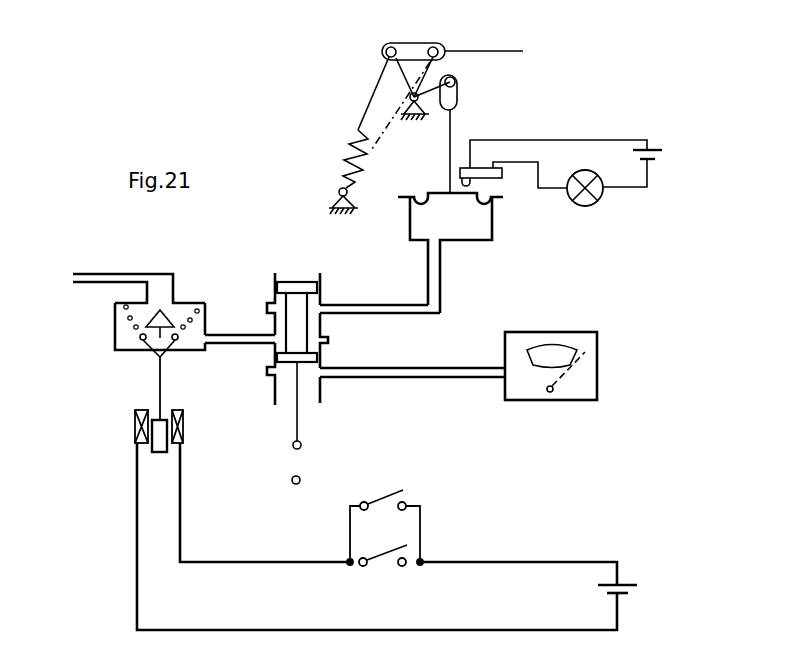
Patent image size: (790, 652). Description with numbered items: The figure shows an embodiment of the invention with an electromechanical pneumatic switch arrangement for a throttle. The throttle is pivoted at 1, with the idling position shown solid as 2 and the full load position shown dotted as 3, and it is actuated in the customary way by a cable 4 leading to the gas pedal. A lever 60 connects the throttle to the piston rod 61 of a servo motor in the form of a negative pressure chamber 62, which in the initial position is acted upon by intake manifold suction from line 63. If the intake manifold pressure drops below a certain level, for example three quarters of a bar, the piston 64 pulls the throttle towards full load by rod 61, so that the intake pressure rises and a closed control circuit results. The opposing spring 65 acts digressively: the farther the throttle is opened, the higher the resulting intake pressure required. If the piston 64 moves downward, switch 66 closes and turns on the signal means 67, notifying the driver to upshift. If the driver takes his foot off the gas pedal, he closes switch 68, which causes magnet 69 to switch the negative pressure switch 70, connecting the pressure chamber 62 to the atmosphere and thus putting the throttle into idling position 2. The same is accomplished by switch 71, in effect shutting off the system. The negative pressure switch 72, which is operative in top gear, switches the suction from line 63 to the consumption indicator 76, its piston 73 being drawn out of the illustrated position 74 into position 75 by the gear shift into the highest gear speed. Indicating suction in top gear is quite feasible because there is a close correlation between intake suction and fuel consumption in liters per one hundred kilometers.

The throttle pivot 1 is at (402, 91).
The idling position 2 is at (391, 47).
The full load position 3 is at (434, 47).
The cable 4 is at (483, 51).
The lever 60 is at (458, 78).
The piston rod 61 is at (452, 130).
The negative pressure chamber 62 is at (497, 228).
The line 63 is at (75, 280).
The piston 64 is at (439, 204).
The opposing spring 65 is at (343, 137).
The switch 66 is at (503, 178).
The signal means 67 is at (597, 201).
The switch 68 is at (378, 548).
The magnet 69 is at (135, 431).
The negative pressure switch 70 is at (135, 354).
The switch 71 is at (383, 498).
The negative pressure switch 72 is at (318, 395).
The piston 73 is at (300, 323).
The illustrated position 74 is at (301, 445).
The position 75 is at (300, 481).
The consumption indicator 76 is at (580, 395).